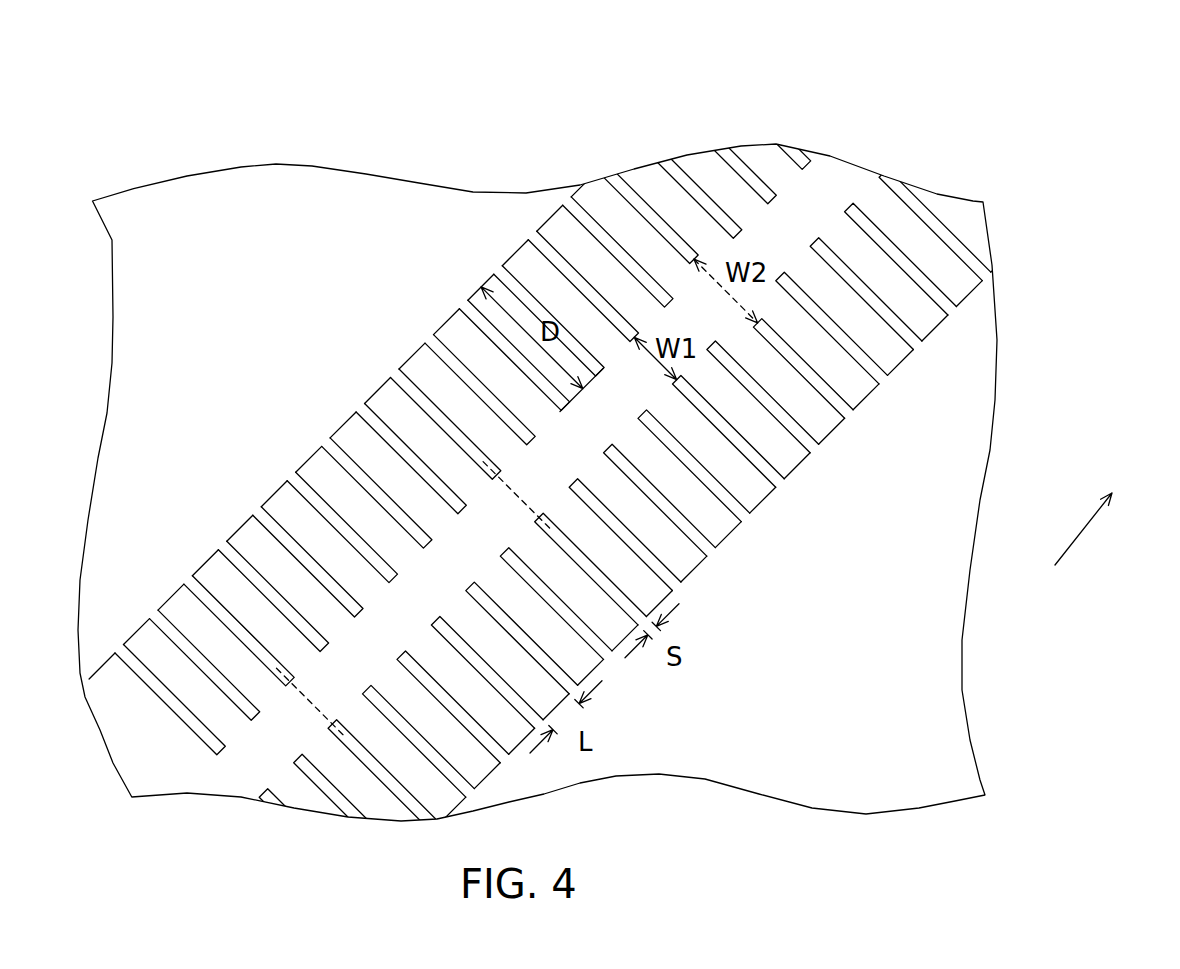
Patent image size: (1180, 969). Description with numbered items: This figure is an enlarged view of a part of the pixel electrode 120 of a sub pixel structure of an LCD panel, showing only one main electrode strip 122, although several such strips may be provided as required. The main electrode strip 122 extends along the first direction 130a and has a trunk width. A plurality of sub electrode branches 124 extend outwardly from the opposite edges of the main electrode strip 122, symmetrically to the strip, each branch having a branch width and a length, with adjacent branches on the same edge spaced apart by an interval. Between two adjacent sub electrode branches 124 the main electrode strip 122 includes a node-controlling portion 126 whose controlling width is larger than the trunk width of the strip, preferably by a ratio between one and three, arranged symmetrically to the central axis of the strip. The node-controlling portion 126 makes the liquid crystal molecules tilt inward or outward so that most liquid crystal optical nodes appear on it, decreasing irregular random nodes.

The pixel electrode 120 is at (1001, 99).
The main electrode strip 122 is at (833, 182).
The sub electrode branches 124 is at (613, 212).
The node-controlling portion 126 is at (323, 692).
The first direction 130a is at (1113, 513).